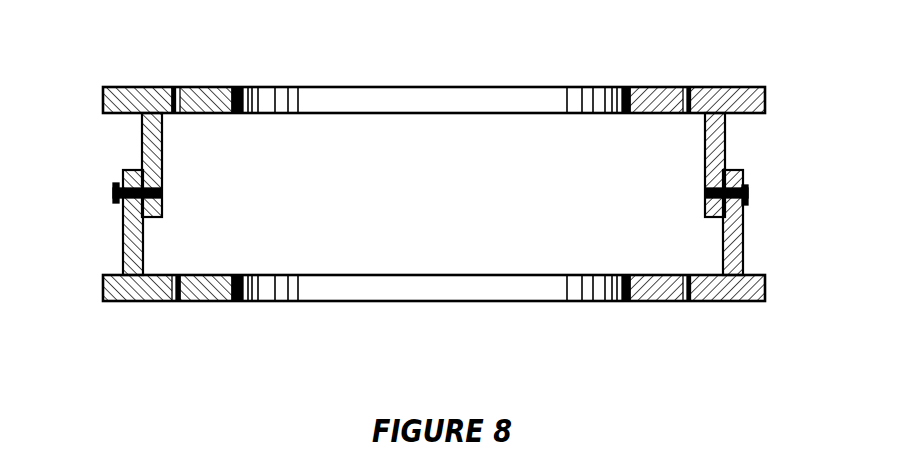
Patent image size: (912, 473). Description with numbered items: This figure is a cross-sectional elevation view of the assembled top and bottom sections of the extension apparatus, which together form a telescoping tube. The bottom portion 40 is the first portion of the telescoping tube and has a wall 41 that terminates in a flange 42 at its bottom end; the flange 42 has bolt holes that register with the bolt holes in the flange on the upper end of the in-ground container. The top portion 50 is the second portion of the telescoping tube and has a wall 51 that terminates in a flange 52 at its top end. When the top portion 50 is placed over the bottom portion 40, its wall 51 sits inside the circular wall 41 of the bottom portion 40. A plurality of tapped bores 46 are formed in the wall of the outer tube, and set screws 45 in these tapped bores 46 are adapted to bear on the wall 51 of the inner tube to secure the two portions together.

The bottom portion 40 is at (433, 282).
The wall 41 is at (122, 255).
The flange 42 is at (199, 301).
The set screws 45 is at (113, 188).
The tapped bores 46 is at (120, 207).
The top portion 50 is at (437, 110).
The wall 51 is at (142, 150).
The flange 52 is at (213, 87).